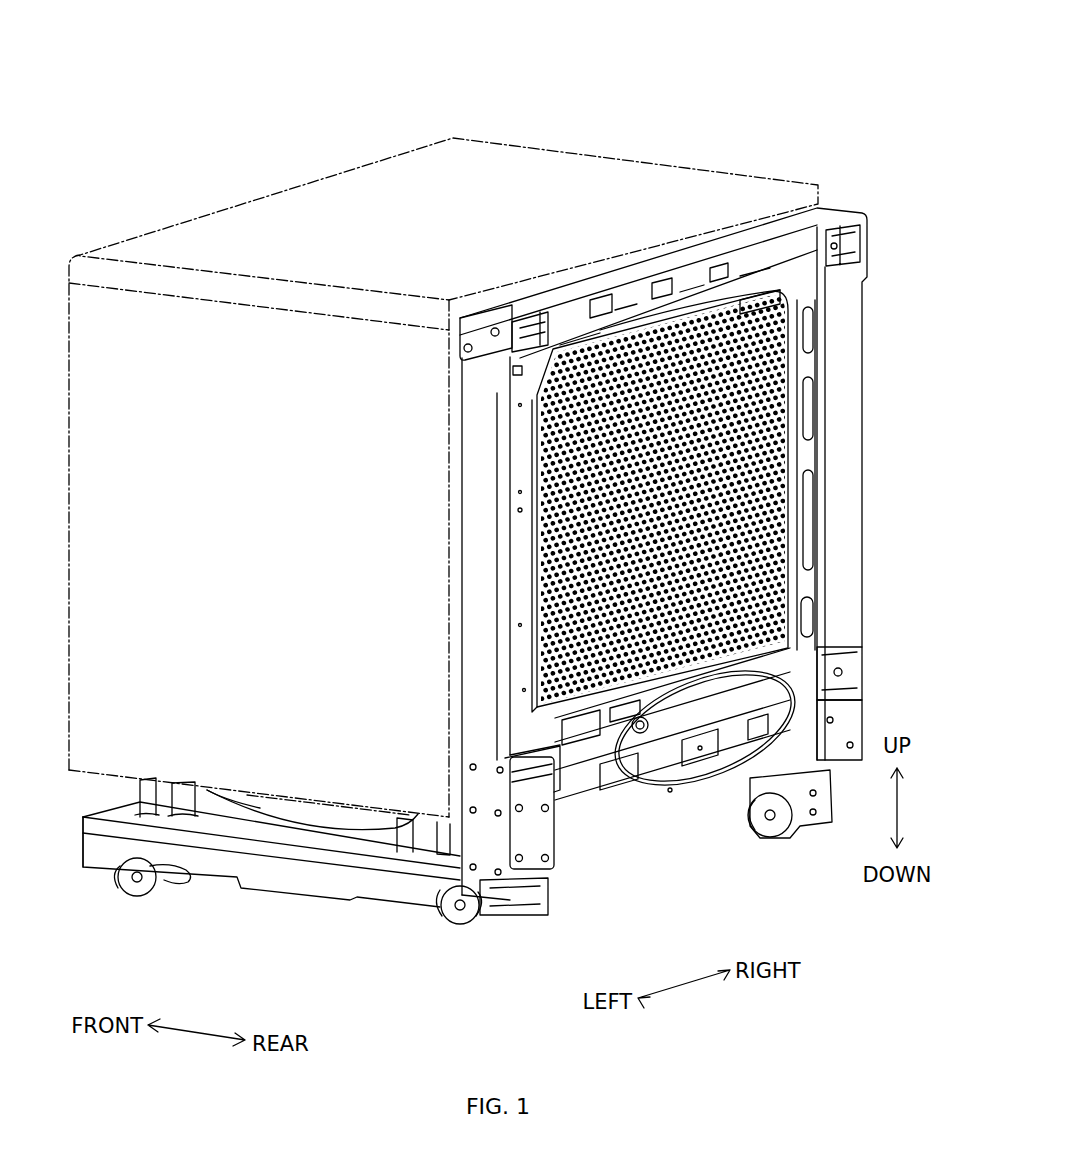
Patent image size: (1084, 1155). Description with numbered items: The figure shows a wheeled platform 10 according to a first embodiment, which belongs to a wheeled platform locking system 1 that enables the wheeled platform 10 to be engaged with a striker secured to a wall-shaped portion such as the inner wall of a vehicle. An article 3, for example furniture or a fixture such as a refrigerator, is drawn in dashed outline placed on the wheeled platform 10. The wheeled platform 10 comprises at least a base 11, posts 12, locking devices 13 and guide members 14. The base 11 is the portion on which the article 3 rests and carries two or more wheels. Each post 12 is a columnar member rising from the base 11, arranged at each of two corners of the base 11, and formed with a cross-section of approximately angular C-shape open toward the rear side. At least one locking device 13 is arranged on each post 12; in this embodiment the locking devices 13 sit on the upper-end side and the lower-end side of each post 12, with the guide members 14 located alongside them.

The wheeled platform locking system 1 is at (685, 52).
The article 3 is at (557, 148).
The wheeled platform 10 is at (273, 910).
The base 11 is at (370, 885).
The post 12 is at (863, 583).
The locking device 13 is at (548, 313).
The guide member 14 is at (867, 658).